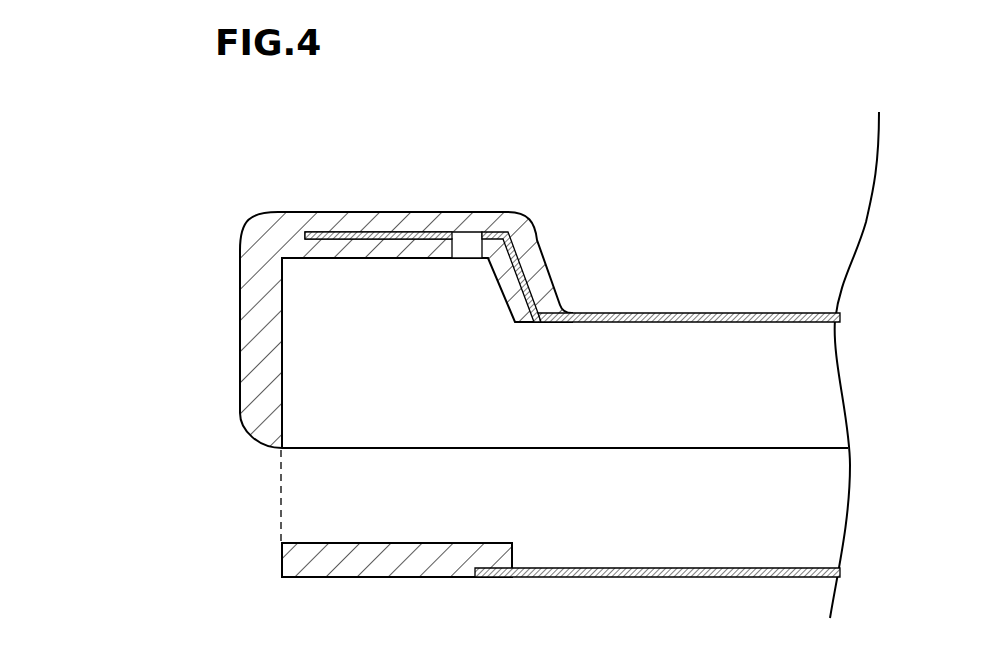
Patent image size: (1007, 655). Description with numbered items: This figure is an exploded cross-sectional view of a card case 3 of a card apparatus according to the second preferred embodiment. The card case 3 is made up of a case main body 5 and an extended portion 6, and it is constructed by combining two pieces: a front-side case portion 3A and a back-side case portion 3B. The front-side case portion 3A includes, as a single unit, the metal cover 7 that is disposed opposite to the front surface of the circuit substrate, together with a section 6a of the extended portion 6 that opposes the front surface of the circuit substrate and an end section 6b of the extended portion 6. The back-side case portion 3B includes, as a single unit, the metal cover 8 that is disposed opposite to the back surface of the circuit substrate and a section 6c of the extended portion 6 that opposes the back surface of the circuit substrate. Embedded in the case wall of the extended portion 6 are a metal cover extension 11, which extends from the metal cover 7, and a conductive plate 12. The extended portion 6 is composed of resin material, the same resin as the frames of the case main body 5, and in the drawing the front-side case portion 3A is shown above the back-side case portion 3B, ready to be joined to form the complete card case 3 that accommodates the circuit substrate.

The card case 3 is at (80, 222).
The front-side case portion 3A is at (240, 273).
The back-side case portion 3B is at (281, 558).
The case main body 5 is at (879, 122).
The extended portion 6 is at (386, 359).
The section opposing the front surface of the circuit substrate 6a is at (393, 210).
The end section of the extended portion 6b is at (240, 340).
The section opposing the back surface of the circuit substrate 6c is at (393, 577).
The metal cover 7 is at (680, 313).
The metal cover 8 is at (620, 568).
The metal cover extension 11 is at (520, 260).
The conductive plate 12 is at (353, 240).